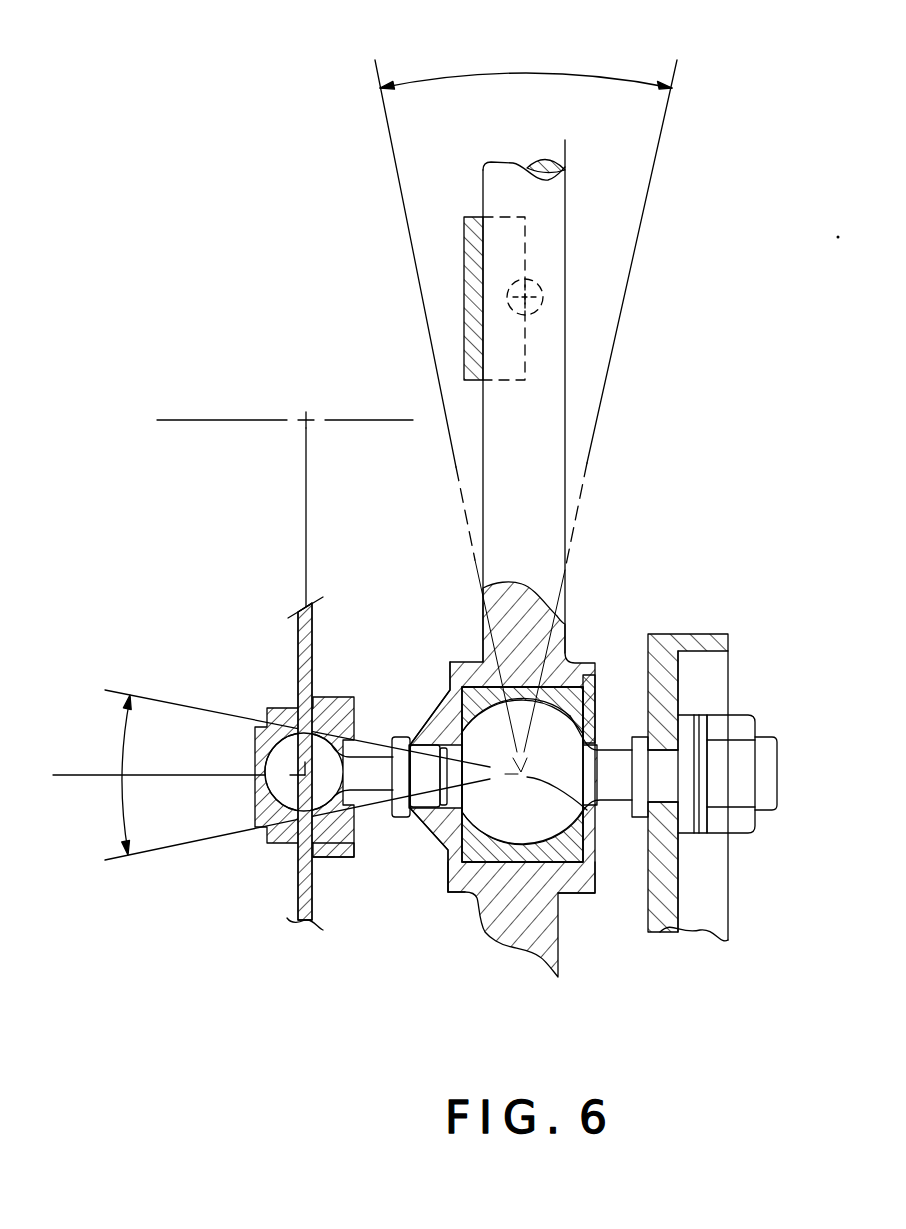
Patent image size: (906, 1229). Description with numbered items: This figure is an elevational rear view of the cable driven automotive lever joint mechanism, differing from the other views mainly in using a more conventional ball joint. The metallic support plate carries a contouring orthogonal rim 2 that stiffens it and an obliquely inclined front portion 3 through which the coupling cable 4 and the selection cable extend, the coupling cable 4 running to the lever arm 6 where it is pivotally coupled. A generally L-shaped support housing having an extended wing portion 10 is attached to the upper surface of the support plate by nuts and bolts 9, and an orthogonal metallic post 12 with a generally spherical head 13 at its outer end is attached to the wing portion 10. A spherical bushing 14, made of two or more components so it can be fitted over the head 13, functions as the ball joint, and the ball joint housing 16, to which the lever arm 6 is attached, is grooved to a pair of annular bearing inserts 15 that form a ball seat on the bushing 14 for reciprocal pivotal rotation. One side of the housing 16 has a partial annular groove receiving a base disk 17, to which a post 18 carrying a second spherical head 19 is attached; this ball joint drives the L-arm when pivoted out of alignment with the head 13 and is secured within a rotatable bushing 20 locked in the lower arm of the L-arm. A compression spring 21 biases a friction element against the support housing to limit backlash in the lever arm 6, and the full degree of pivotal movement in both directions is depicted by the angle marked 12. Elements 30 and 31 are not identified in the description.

The contouring orthogonal rim 2 is at (727, 634).
The obliquely inclined front portion 3 is at (490, 565).
The coupling cable 4 is at (594, 823).
The lever arm 6 is at (300, 902).
The nuts and bolts 9 is at (305, 418).
The extended wing portion 10 is at (468, 235).
The orthogonal metallic post 12 is at (547, 73).
The generally spherical head 13 is at (483, 822).
The spherical bushing 14 is at (763, 760).
The annular bearing inserts 15 is at (470, 893).
The ball joint housing 16 is at (456, 662).
The base disk 17 is at (95, 775).
The post 18 is at (384, 760).
The second spherical head 19 is at (262, 793).
The rotatable bushing 20 is at (257, 742).
The compression spring 21 is at (338, 857).
The bearing liner 30 is at (600, 700).
The washer 31 is at (743, 817).